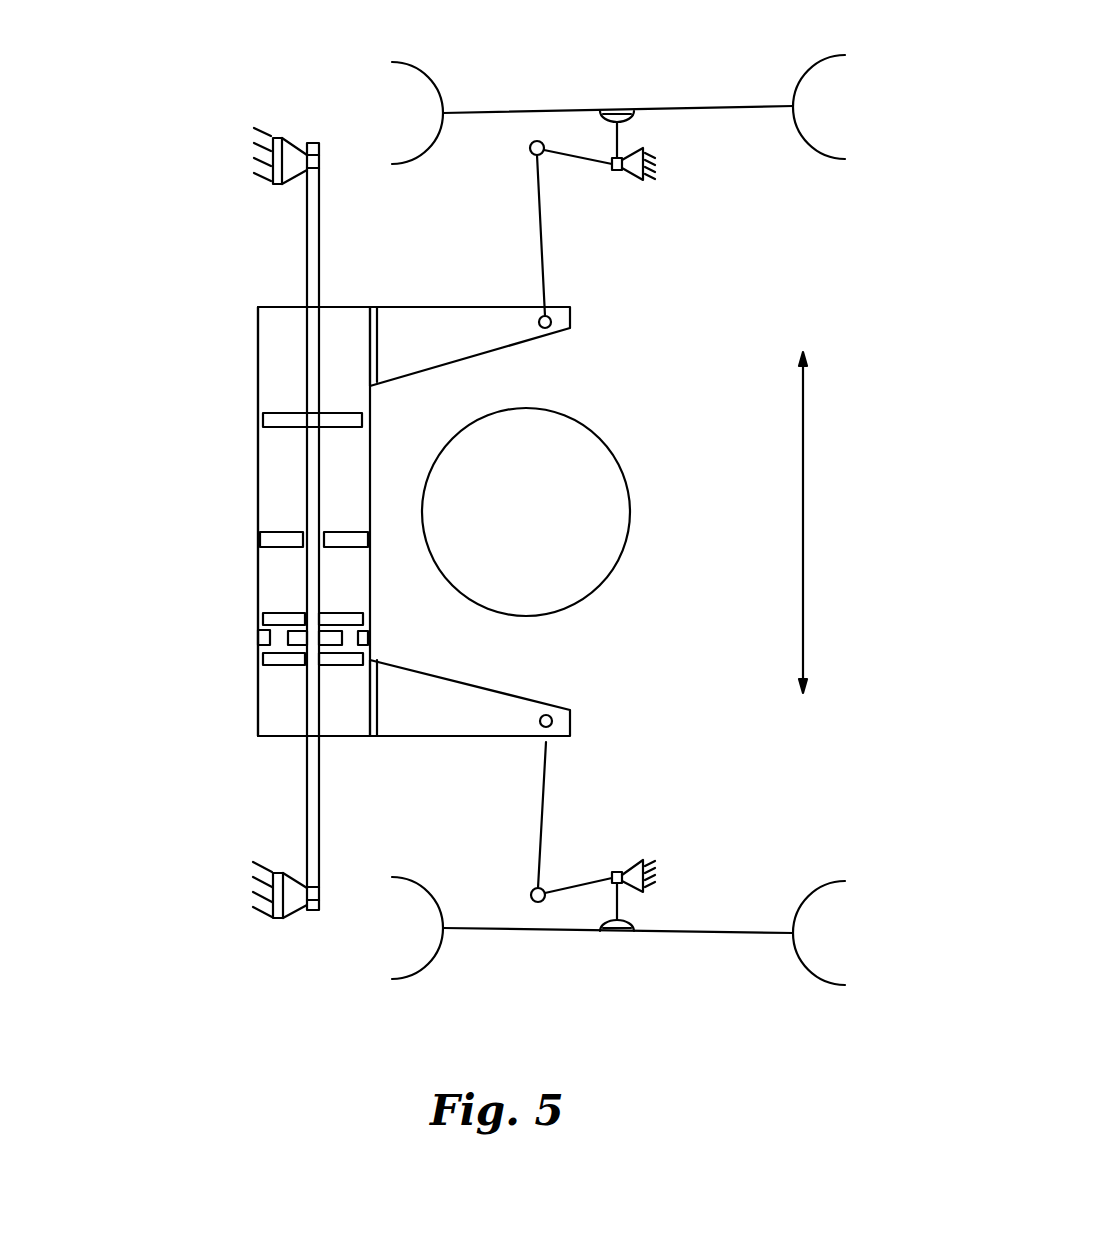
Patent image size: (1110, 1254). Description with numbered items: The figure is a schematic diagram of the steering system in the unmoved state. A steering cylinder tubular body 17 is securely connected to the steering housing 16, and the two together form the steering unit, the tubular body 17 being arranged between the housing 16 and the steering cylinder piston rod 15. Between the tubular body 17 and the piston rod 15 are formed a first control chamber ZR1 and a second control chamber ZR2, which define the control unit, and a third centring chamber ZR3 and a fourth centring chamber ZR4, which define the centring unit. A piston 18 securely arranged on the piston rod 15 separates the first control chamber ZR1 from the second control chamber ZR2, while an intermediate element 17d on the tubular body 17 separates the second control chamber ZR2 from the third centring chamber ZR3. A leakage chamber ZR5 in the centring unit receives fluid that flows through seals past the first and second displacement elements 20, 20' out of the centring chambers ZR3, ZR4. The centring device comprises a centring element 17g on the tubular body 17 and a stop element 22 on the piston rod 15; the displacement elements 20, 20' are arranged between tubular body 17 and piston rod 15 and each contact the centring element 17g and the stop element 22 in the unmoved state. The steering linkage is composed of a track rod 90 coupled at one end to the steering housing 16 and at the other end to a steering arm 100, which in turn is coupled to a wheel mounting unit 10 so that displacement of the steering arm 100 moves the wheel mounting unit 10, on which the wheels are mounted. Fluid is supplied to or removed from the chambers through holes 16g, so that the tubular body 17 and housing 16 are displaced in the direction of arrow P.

The wheel mounting unit 10 is at (541, 112).
The steering cylinder piston rod 15 is at (319, 190).
The steering housing 16 is at (577, 330).
The holes 16g is at (258, 315).
The steering cylinder tubular body 17 is at (278, 302).
The intermediate element 17d is at (278, 530).
The centring element 17g is at (370, 637).
The piston 18 is at (278, 410).
The first displacement element 20 is at (341, 581).
The second displacement element 20' is at (334, 734).
The stop element 22 is at (340, 637).
The track rod 90 is at (540, 203).
The steering arm 100 is at (617, 133).
The first control chamber ZR1 is at (340, 322).
The second control chamber ZR2 is at (362, 452).
The third centring chamber ZR3 is at (347, 582).
The fourth centring chamber ZR4 is at (273, 722).
The leakage chamber ZR5 is at (273, 637).
The arrow P is at (812, 522).